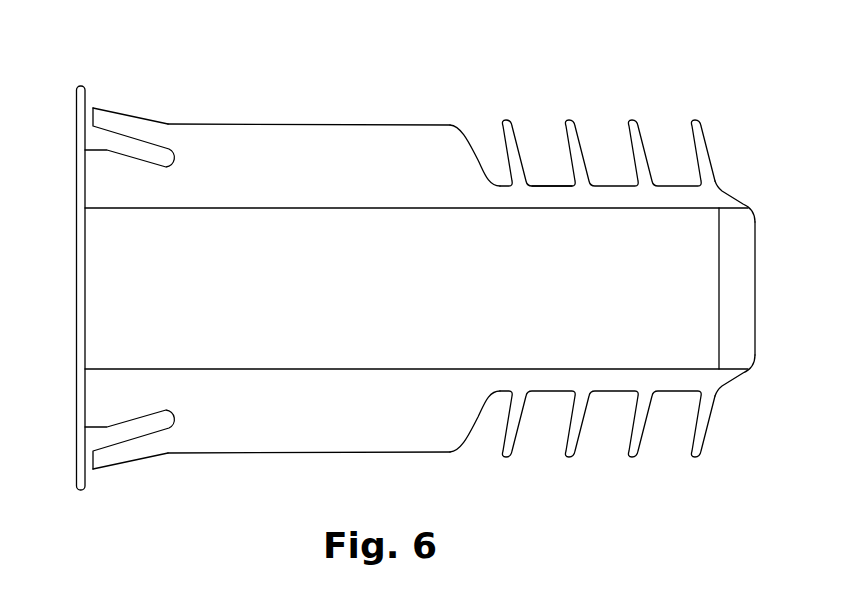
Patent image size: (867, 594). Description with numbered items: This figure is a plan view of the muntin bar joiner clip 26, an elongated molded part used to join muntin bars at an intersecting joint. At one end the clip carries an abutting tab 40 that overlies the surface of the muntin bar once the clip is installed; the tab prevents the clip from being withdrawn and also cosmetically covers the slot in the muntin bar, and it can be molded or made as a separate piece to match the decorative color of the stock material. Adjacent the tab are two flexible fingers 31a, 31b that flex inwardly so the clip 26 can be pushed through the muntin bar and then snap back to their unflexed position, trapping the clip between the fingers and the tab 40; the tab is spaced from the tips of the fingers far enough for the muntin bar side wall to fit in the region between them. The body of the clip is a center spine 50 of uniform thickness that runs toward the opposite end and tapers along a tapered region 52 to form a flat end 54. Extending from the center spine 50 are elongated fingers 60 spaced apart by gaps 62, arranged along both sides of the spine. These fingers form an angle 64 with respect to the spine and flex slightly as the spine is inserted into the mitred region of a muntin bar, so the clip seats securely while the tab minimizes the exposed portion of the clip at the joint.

The clip 26 is at (559, 82).
The abutting tab 40 is at (77, 100).
The flexible finger 31a is at (110, 115).
The flexible finger 31b is at (122, 452).
The center spine 50 is at (143, 306).
The tapered region 52 is at (737, 272).
The flat end 54 is at (757, 293).
The elongated fingers 60 is at (640, 137).
The gaps 62 is at (663, 445).
The angle 64 is at (521, 197).